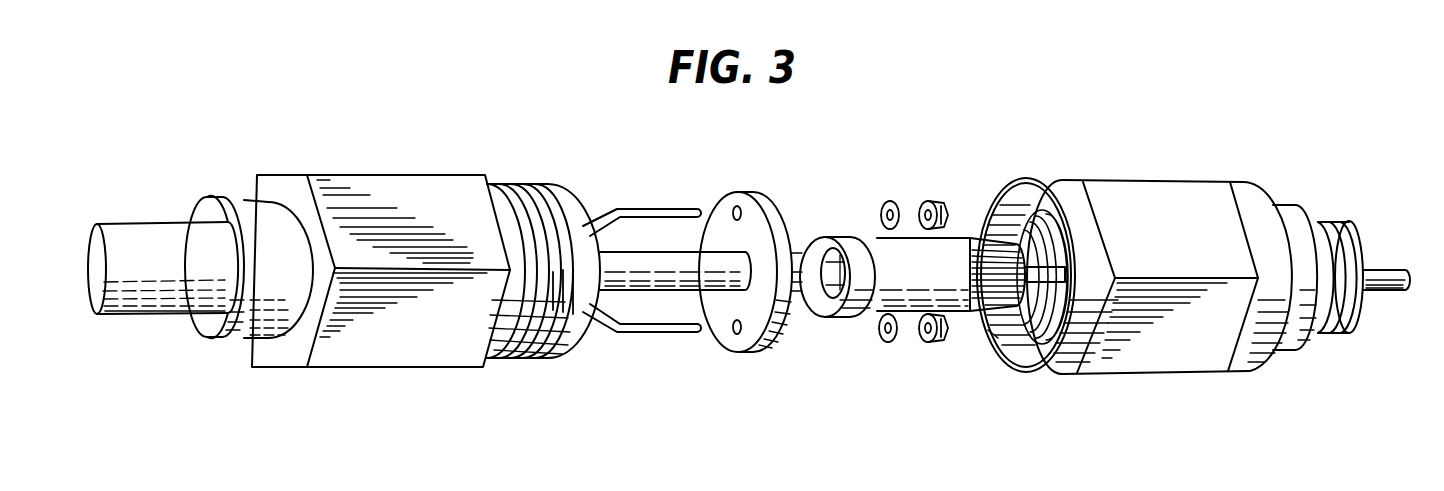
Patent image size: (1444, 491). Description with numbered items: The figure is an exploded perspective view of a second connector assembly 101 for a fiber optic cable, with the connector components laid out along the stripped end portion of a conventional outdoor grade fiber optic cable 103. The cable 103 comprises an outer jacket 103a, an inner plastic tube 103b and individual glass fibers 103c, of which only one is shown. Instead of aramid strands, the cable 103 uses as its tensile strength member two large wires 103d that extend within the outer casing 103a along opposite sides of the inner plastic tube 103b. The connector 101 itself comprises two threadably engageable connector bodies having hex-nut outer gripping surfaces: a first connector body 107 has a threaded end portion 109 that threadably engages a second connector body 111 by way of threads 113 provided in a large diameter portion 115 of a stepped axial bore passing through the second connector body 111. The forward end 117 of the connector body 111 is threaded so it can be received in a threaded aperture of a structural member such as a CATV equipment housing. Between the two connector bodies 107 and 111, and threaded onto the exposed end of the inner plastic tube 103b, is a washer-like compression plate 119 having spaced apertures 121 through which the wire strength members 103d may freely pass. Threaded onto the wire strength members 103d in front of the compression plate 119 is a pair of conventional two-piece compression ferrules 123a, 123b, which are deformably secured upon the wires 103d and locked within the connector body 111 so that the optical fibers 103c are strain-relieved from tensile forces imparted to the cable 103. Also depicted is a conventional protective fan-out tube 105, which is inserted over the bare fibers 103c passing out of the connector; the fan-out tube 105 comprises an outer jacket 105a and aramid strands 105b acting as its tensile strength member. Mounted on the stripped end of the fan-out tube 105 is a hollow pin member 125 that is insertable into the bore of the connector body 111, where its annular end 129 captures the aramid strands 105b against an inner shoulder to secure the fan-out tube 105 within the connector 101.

The connector assembly 101 is at (259, 115).
The fiber optic cable 103 is at (121, 199).
The outer jacket 103a is at (124, 318).
The inner plastic tube 103b is at (655, 293).
The glass fibers 103c is at (806, 236).
The wire strength members 103d is at (655, 206).
The fan-out tube 105 is at (1385, 266).
The outer jacket 105a is at (1392, 291).
The aramid strands 105b is at (972, 232).
The first connector body 107 is at (405, 174).
The threaded end portion 109 is at (540, 183).
The second connector body 111 is at (1165, 181).
The threads 113 is at (1043, 372).
The large diameter portion 115 is at (993, 337).
The forward end 117 is at (1323, 220).
The compression plate 119 is at (757, 351).
The apertures 121 is at (742, 206).
The compression ferrule 123a is at (896, 201).
The compression ferrule 123b is at (931, 201).
The pin member 125 is at (916, 300).
The annular end 129 is at (1045, 186).